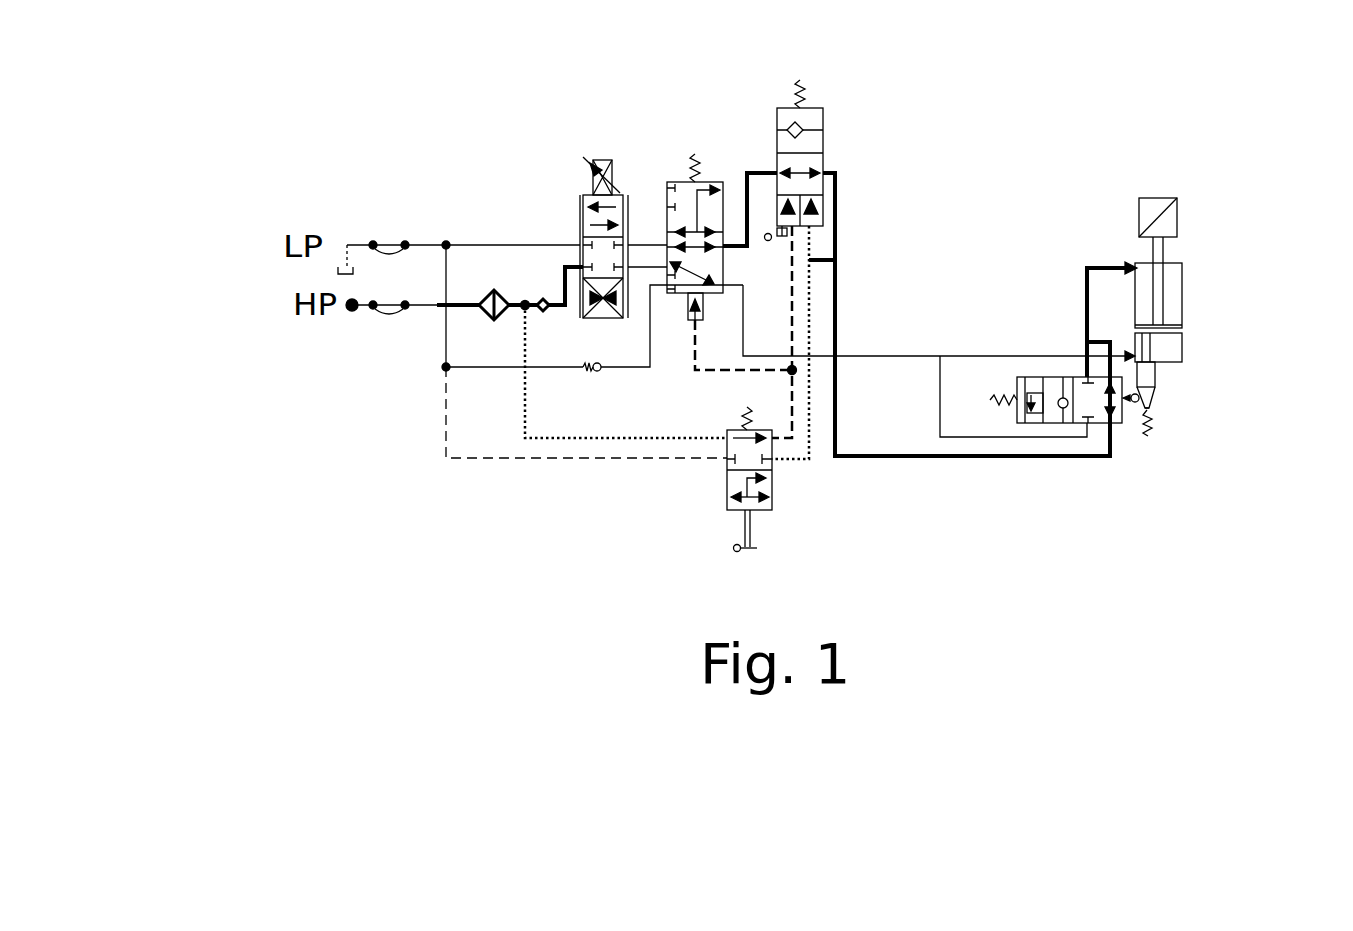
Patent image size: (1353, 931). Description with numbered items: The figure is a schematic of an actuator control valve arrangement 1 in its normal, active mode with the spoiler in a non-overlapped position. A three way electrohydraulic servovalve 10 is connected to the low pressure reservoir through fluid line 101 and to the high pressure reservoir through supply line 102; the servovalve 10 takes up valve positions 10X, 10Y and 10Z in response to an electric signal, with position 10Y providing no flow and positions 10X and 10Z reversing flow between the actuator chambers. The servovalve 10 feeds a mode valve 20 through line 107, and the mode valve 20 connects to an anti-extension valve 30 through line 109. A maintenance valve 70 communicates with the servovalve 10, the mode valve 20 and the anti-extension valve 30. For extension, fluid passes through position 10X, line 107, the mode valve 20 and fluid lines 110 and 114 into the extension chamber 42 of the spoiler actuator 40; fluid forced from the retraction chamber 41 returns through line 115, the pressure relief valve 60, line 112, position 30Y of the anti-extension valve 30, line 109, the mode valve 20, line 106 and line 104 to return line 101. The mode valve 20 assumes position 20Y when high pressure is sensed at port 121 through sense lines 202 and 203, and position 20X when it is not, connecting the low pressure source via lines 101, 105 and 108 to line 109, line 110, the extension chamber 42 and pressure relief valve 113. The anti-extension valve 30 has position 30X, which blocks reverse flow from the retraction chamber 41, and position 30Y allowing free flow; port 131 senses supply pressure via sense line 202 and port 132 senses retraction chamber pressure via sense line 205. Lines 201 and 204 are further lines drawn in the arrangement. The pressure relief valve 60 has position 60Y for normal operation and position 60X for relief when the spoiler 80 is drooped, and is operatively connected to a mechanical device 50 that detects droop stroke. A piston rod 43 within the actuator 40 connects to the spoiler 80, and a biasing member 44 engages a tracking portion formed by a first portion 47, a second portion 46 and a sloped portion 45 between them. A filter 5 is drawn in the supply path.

The actuator control valve arrangement 1 is at (258, 181).
The fluid line 101 is at (421, 245).
The supply line 102 is at (428, 304).
The line 104 is at (480, 244).
The line 105 is at (440, 322).
The line 108 is at (650, 362).
The filter 5 is at (510, 293).
The three way electrohydraulic servovalve 10 is at (539, 216).
The valve position 10X is at (580, 212).
The valve position 10Y is at (578, 247).
The valve position 10Z is at (583, 296).
The line 106 is at (652, 243).
The line 107 is at (637, 283).
The mode valve 20 is at (670, 237).
The first position 20X is at (680, 182).
The second position 20Y is at (673, 294).
The line 109 is at (760, 172).
The anti-extension valve 30 is at (821, 142).
The position 30X is at (823, 137).
The position 30Y is at (823, 163).
The port 132 is at (813, 233).
The port 131 is at (787, 238).
The line 112 is at (862, 270).
The fluid line 110 is at (744, 312).
The fluid line 114 is at (993, 355).
The pressure relief valve 113 is at (940, 407).
The line 115 is at (1085, 308).
The port 121 is at (699, 321).
The sense line 203 is at (723, 377).
The control line 204 is at (791, 334).
The sense line 205 is at (811, 321).
The sense line 202 is at (524, 436).
The control line 201 is at (518, 459).
The maintenance valve 70 is at (790, 494).
The pressure relief valve 60 is at (1072, 457).
The position 60X is at (1047, 426).
The position 60Y is at (1100, 426).
The spoiler 80 is at (1157, 189).
The spoiler actuator 40 is at (1212, 344).
The piston rod 43 is at (1165, 252).
The retraction chamber 41 is at (1178, 283).
The extension chamber 42 is at (1173, 350).
The second portion 46 is at (1157, 374).
The mechanical device 50 is at (1139, 420).
The sloped portion 45 is at (1150, 390).
The first portion 47 is at (1153, 410).
The biasing member 44 is at (1152, 411).